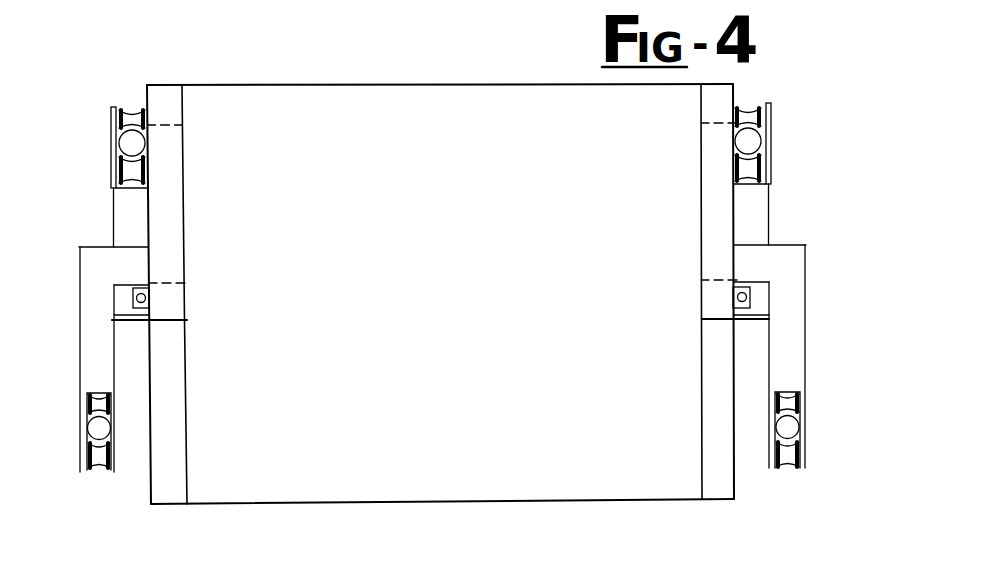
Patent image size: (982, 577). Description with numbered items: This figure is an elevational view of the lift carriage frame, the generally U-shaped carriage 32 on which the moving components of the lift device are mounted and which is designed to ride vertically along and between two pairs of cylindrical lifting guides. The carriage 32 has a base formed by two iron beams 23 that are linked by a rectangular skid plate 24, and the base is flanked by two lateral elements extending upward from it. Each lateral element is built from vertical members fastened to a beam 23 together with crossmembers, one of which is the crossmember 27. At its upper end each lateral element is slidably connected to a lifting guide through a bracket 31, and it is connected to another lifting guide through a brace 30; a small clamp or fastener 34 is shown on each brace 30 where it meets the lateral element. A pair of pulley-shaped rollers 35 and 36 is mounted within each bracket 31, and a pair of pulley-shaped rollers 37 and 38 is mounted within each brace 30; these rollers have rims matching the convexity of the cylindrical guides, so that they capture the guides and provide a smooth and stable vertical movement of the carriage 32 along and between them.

The iron beam 23 is at (179, 462).
The rectangular skid plate 24 is at (472, 84).
The crossmember 27 is at (183, 213).
The brace 30 is at (84, 326).
The bracket 31 is at (118, 228).
The carriage 32 is at (289, 76).
The clamp fastener 34 is at (140, 318).
The pulley shaped roller 35 is at (130, 175).
The pulley shaped roller 36 is at (130, 112).
The pulley shaped roller 37 is at (99, 464).
The pulley shaped roller 38 is at (99, 412).